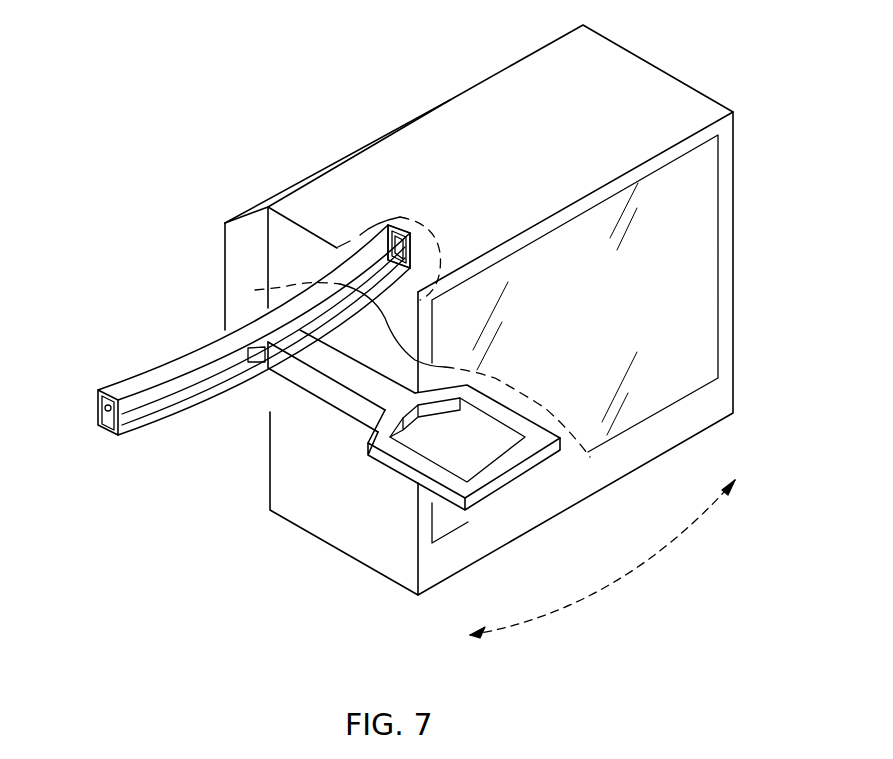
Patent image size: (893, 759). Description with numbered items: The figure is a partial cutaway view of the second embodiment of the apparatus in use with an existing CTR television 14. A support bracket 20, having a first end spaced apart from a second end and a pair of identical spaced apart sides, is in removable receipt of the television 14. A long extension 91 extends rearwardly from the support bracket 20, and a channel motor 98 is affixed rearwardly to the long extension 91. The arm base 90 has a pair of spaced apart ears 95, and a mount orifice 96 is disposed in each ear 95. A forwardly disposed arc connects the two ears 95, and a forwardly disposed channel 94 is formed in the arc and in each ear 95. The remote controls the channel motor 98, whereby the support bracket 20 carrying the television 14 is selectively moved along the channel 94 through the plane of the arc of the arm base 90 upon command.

The CTR television 14 is at (647, 77).
The support bracket 20 is at (407, 473).
The arm base 90 is at (217, 296).
The long extension 91 is at (291, 338).
The forwardly disposed channel 94 is at (160, 420).
The ears 95 is at (387, 233).
The mount orifice 96 is at (104, 408).
The channel motor 98 is at (258, 352).